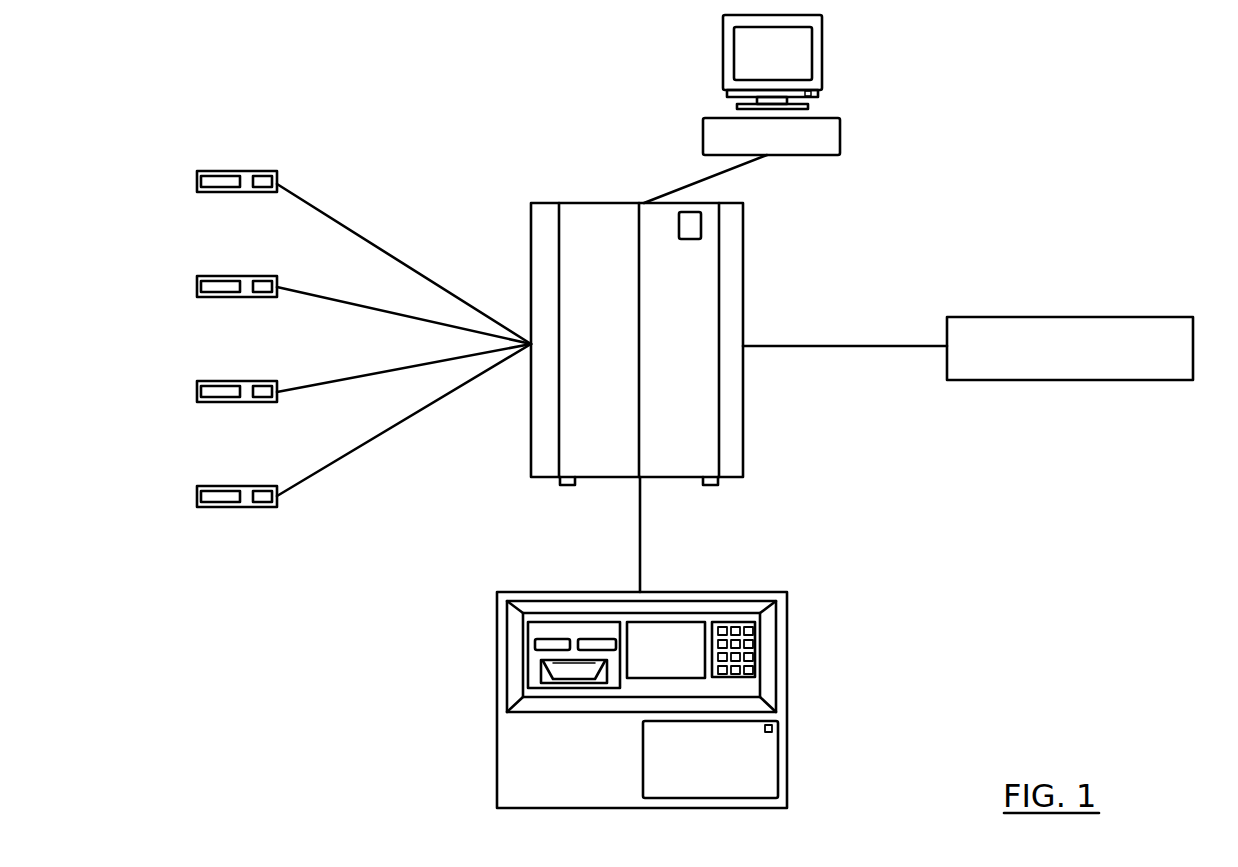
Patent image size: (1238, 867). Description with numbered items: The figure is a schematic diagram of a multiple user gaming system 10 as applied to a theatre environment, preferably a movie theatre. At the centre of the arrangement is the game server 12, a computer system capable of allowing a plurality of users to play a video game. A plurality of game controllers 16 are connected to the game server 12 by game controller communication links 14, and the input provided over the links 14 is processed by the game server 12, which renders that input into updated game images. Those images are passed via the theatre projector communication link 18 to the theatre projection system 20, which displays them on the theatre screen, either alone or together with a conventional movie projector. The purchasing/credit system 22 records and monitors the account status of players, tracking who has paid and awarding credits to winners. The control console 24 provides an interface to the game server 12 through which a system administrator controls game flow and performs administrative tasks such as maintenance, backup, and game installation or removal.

The gaming system 10 is at (985, 195).
The game server 12 is at (744, 282).
The game controller communication links 14 is at (368, 241).
The game controllers 16 is at (197, 182).
The theatre projector communication link 18 is at (861, 346).
The theatre projection system 20 is at (1047, 317).
The purchasing/credit system 22 is at (788, 699).
The control console 24 is at (723, 71).